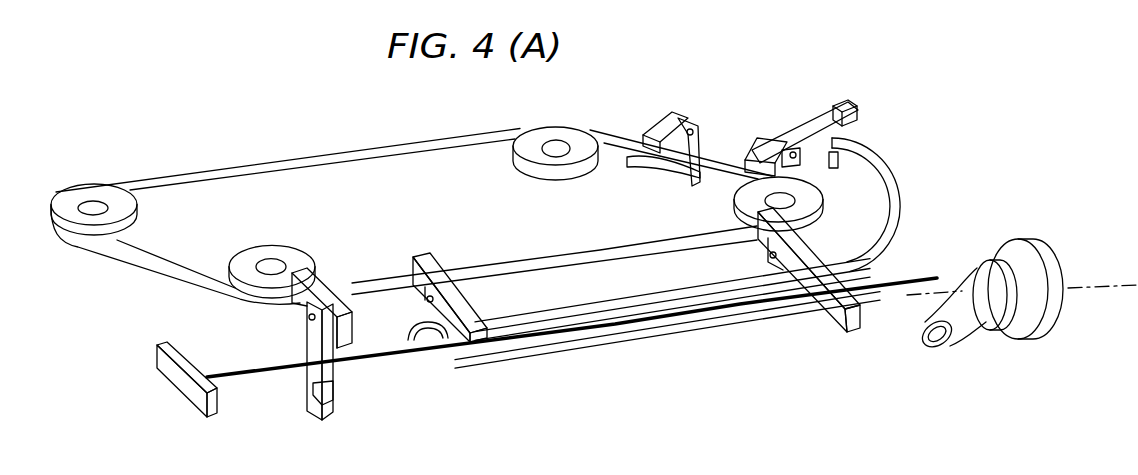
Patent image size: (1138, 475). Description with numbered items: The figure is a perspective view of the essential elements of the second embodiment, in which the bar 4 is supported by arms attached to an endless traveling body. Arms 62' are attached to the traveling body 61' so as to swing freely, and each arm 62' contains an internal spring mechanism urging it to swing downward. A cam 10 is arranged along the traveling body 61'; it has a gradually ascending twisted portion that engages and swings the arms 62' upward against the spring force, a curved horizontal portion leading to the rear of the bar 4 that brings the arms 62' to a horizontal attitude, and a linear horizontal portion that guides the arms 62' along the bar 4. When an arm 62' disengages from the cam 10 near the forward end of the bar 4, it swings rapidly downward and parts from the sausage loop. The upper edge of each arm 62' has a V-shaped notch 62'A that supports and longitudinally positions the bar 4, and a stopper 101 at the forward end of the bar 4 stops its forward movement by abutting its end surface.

The cam 10 is at (877, 168).
The traveling body 61' is at (554, 249).
The arm 62' is at (667, 313).
The V-shaped notch 62'A is at (576, 330).
The bar 4 is at (610, 322).
The stopper 101 is at (177, 382).